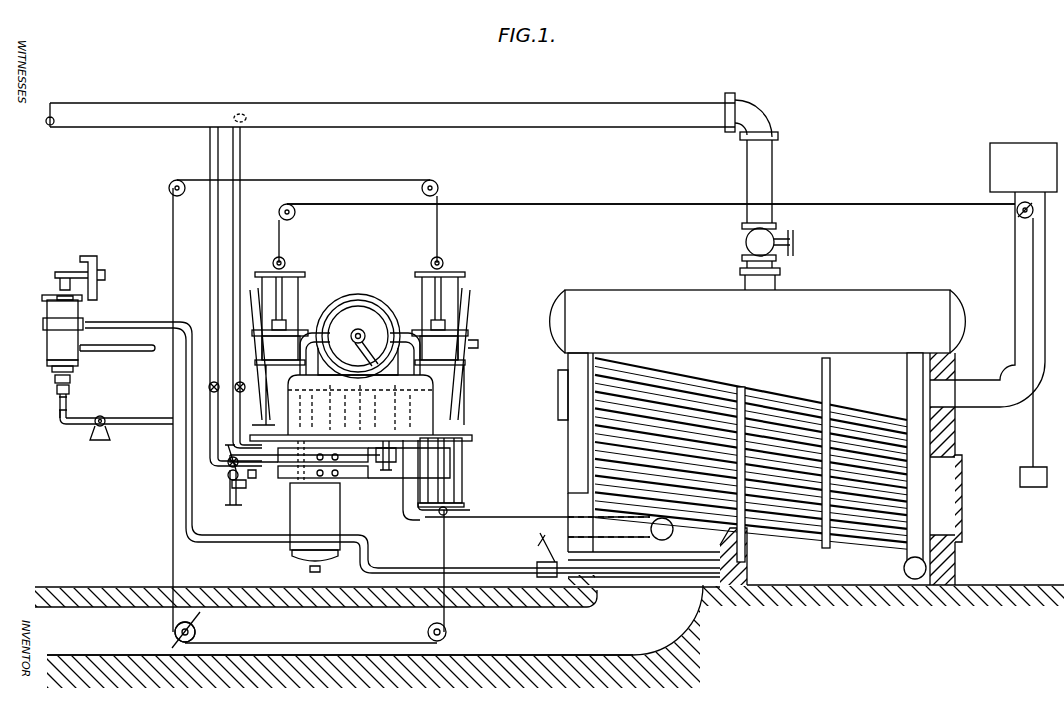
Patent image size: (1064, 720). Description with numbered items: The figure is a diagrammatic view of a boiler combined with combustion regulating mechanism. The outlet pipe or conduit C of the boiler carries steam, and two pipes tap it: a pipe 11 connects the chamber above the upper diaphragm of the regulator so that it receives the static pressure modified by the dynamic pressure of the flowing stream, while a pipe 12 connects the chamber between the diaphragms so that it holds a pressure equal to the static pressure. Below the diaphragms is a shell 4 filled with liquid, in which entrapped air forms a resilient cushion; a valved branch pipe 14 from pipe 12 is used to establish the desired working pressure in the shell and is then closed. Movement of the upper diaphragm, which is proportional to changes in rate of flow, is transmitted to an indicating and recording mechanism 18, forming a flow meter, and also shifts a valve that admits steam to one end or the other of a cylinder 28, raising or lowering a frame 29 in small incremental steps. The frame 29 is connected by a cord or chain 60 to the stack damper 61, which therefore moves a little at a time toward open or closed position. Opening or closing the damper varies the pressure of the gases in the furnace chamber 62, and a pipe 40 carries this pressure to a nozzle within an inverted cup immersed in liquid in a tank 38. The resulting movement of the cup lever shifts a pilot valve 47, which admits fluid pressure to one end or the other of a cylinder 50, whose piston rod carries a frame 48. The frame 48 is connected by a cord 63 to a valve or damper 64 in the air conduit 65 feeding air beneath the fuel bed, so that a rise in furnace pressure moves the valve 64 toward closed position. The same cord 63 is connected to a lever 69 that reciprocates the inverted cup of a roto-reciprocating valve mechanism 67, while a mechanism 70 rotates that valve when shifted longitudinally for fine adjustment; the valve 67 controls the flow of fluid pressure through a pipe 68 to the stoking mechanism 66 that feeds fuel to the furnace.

The pipe or conduit C is at (419, 184).
The shell 4 is at (340, 510).
The pipe 11 is at (242, 254).
The pipe 12 is at (210, 240).
The valved branch pipe 14 is at (262, 472).
The indicating and recording mechanism 18 is at (364, 300).
The cylinder 28 is at (281, 348).
The frame 29 is at (300, 290).
The tank 38 is at (425, 412).
The pipe or tube 40 is at (511, 517).
The pilot valve 47 is at (396, 462).
The frame 48 is at (420, 290).
The cylinder 50 is at (443, 392).
The cord or chain 60 is at (675, 200).
The stack damper 61 is at (1016, 216).
The furnace chamber 62 is at (678, 529).
The cord 63 is at (331, 184).
The valve or damper 64 is at (196, 622).
The air conduit 65 is at (340, 639).
The stoking mechanism 66 is at (540, 556).
The roto-reciprocating valve mechanism 67 is at (47, 347).
The pipe 68 is at (187, 322).
The lever 69 is at (132, 418).
The mechanism 70 is at (98, 286).